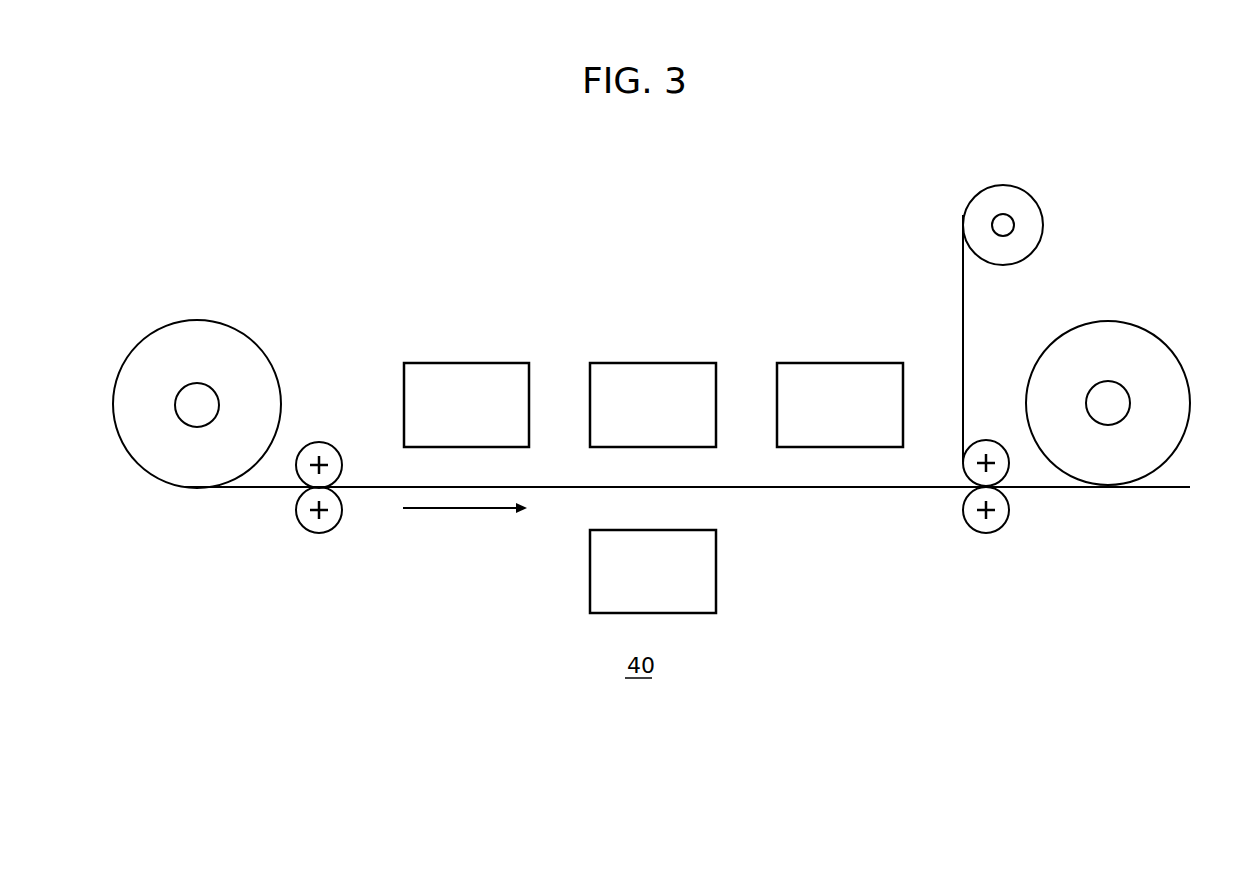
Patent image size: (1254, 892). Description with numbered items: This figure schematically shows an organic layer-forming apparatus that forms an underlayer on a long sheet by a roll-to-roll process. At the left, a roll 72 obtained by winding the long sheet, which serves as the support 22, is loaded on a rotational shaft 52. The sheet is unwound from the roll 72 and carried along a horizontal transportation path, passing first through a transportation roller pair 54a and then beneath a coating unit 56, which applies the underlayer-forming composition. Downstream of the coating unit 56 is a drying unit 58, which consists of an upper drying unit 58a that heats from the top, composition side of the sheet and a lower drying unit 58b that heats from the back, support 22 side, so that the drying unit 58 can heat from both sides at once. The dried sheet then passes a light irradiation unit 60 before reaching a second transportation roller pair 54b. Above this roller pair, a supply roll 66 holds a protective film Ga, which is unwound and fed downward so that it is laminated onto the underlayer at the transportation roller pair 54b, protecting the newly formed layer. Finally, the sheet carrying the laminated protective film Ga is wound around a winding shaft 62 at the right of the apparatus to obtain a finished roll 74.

The support 22 is at (240, 489).
The rotational shaft 52 is at (190, 393).
The transportation roller pair 54a is at (300, 523).
The transportation roller pair 54b is at (965, 523).
The coating unit 56 is at (465, 380).
The drying unit 58 is at (669, 445).
The drying unit 58a is at (657, 368).
The drying unit 58b is at (657, 538).
The light irradiation unit 60 is at (837, 380).
The winding shaft 62 is at (1103, 393).
The supply roll 66 is at (1012, 200).
The roll 72 is at (228, 342).
The roll 74 is at (1127, 342).
The protective film Ga is at (962, 297).